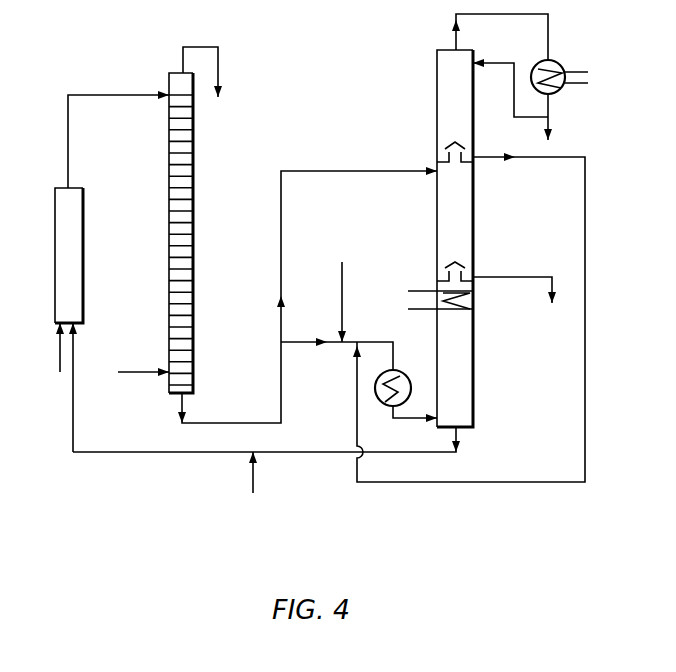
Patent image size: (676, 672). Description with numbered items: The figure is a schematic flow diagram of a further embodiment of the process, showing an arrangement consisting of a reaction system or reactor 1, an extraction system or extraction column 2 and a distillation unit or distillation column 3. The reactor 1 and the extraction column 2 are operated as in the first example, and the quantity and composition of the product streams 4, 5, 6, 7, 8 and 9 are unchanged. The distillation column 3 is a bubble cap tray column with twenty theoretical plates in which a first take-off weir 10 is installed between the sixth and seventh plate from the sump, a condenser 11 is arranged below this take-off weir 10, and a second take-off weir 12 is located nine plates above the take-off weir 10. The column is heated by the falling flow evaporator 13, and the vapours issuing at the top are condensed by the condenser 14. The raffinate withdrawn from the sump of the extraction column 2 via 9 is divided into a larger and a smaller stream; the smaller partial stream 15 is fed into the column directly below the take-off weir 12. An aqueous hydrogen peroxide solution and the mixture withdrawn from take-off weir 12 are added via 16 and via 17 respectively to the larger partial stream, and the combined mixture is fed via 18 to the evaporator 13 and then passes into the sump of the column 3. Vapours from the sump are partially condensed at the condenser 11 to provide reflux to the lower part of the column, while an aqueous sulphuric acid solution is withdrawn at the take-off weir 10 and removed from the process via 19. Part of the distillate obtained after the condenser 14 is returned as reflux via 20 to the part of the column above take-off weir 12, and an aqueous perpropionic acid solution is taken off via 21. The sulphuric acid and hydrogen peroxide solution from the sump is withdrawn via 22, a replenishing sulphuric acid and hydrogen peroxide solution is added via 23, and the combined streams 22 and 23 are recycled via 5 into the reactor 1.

The reactor 1 is at (58, 196).
The extraction column 2 is at (172, 185).
The distillation column 3 is at (446, 72).
The product stream 4 is at (60, 357).
The product stream 5 is at (73, 395).
The product stream 6 is at (68, 119).
The product stream 7 is at (124, 352).
The product stream 8 is at (218, 69).
The product stream 9 is at (213, 423).
The first take-off weir 10 is at (443, 278).
The condenser 11 is at (465, 308).
The second take-off weir 12 is at (444, 160).
The falling flow evaporator 13 is at (406, 378).
The condenser 14 is at (552, 62).
The smaller partial stream 15 is at (281, 185).
The hydrogen peroxide feed line 16 is at (342, 274).
The take-off weir return line 17 is at (357, 389).
The feed line to evaporator 18 is at (377, 342).
The product stream 19 is at (551, 277).
The reflux line 20 is at (493, 62).
The product take-off line 21 is at (552, 128).
The product stream 22 is at (462, 440).
The replenishment line 23 is at (254, 476).